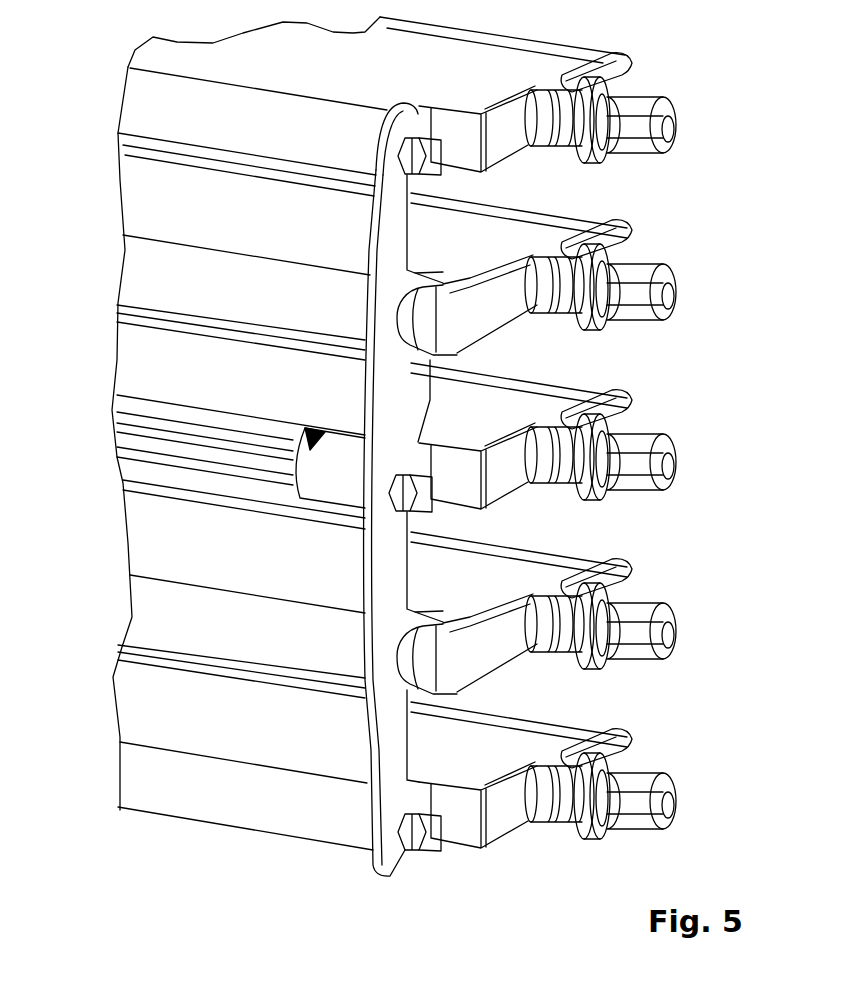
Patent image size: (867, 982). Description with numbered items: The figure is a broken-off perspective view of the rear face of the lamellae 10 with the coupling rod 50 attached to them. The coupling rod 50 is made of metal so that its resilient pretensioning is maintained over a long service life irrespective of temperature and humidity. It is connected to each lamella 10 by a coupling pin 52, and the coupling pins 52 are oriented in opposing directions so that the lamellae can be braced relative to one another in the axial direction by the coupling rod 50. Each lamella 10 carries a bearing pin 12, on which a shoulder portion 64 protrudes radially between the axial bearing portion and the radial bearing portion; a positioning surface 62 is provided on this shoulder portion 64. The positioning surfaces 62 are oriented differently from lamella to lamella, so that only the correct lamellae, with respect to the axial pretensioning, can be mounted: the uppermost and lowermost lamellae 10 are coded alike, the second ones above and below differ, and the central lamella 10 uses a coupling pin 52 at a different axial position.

The lamella 10 is at (560, 463).
The bearing pin 12 is at (670, 124).
The coupling rod 50 is at (355, 310).
The coupling pin 52 is at (448, 170).
The positioning surface 62 is at (631, 66).
The shoulder portion 64 is at (606, 323).